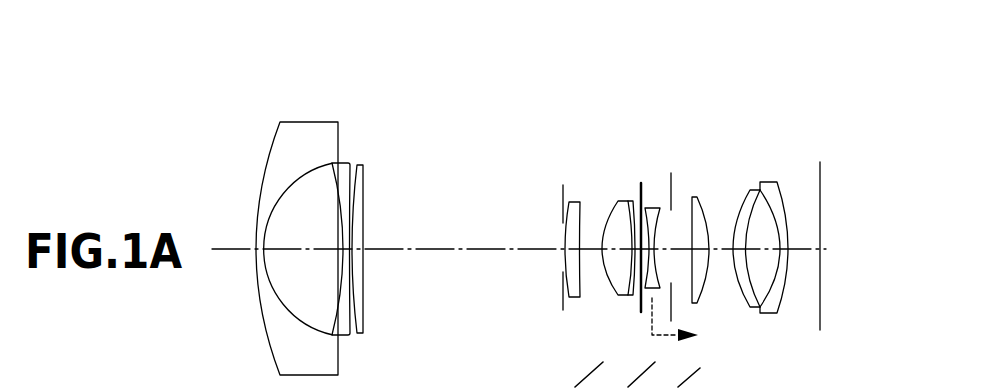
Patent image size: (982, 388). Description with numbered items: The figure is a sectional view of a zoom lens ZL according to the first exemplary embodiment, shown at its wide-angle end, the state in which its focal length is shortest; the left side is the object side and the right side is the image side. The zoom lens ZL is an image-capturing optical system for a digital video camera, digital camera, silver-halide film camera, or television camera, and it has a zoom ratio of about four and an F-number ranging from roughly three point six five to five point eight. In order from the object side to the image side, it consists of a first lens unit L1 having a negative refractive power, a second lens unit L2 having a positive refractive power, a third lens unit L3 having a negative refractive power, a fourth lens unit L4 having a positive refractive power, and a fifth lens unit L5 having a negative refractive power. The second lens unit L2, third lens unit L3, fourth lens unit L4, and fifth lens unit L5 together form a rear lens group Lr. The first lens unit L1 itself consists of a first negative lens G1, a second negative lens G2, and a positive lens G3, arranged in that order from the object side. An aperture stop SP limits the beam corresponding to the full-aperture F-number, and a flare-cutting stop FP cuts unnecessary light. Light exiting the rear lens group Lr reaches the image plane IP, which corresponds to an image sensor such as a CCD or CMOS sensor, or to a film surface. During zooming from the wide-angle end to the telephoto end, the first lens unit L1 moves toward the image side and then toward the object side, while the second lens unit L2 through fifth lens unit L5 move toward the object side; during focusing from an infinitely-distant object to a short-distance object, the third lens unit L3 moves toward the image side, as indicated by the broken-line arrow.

The first lens unit L1 is at (550, 115).
The second lens unit L2 is at (646, 115).
The third lens unit L3 is at (680, 115).
The fourth lens unit L4 is at (709, 115).
The fifth lens unit L5 is at (802, 115).
The rear lens group Lr is at (808, 60).
The first negative lens G1 is at (338, 138).
The second negative lens G2 is at (347, 162).
The positive lens G3 is at (364, 206).
The aperture stop SP is at (563, 203).
The flare-cutting stop FP is at (641, 307).
The image plane IP is at (820, 208).
The zoom lens ZL is at (893, 328).